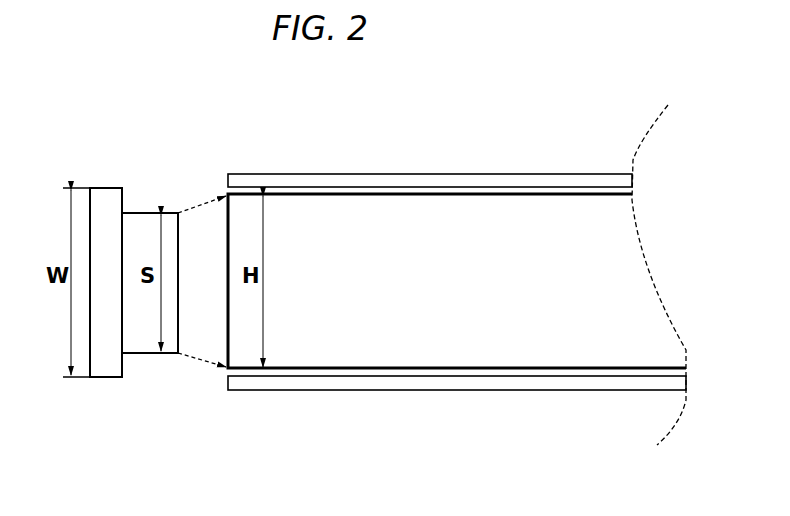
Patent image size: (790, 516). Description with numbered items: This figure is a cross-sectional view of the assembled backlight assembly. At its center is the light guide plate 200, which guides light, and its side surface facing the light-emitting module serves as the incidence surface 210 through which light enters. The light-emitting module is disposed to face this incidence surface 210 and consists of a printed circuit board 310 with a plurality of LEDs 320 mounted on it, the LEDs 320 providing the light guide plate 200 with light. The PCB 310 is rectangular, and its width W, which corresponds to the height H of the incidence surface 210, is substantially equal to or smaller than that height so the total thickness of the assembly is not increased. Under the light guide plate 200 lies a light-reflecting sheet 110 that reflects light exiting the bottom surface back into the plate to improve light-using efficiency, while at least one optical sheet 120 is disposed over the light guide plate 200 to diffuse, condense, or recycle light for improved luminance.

The light-reflecting sheet 110 is at (422, 392).
The optical sheet 120 is at (406, 185).
The light guide plate 200 is at (328, 345).
The incidence surface 210 is at (225, 333).
The printed circuit board 310 is at (101, 190).
The LEDs 320 is at (142, 215).